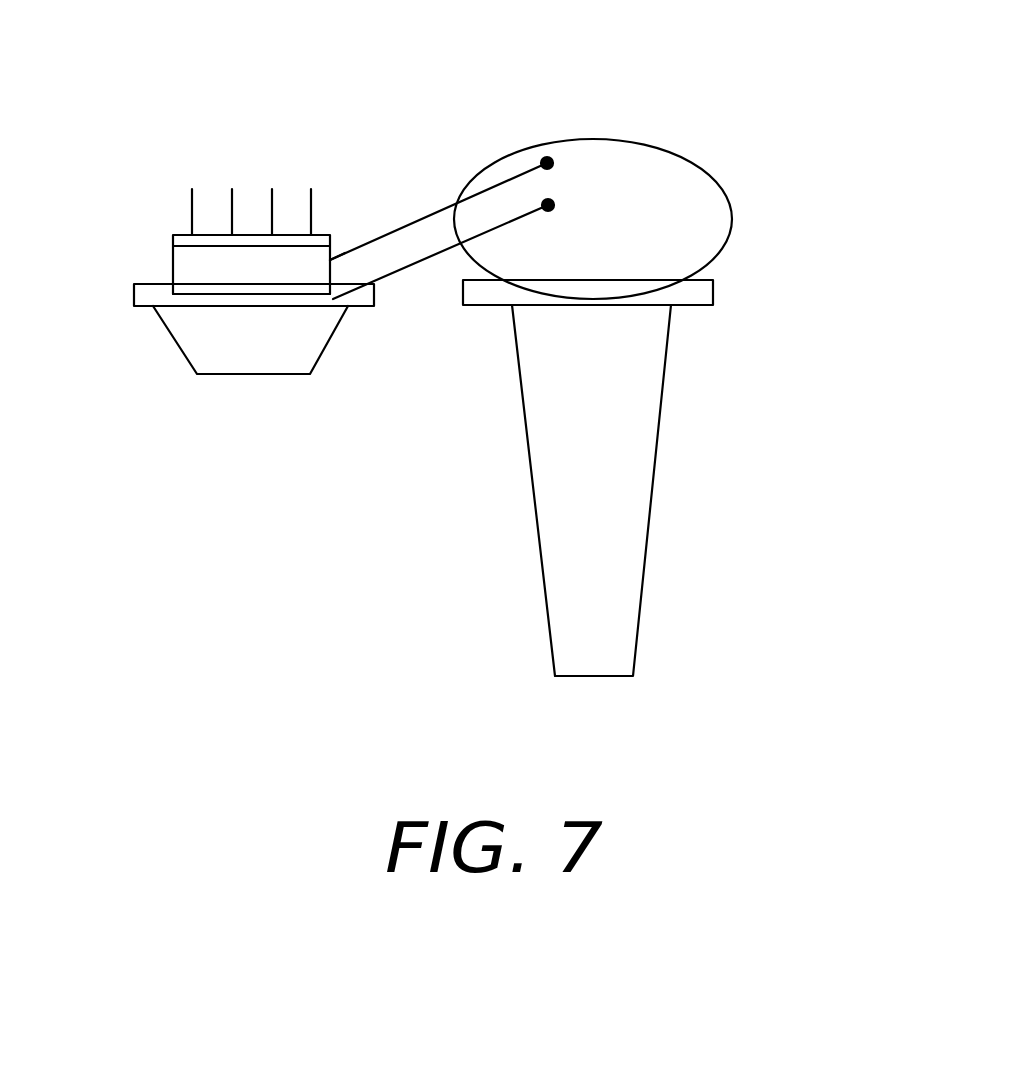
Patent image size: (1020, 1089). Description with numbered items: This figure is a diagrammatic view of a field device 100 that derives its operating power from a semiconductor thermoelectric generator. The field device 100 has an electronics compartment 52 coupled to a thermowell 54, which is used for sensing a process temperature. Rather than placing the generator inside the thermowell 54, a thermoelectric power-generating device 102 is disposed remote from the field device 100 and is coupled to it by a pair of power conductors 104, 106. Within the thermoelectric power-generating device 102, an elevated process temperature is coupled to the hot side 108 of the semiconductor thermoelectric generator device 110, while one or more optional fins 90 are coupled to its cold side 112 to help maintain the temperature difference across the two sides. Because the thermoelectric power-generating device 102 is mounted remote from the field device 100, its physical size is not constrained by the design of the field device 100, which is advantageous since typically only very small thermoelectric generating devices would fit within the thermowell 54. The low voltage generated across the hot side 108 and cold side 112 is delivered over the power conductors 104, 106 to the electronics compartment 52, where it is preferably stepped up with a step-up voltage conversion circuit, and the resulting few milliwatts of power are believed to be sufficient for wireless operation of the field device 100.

The electronics compartment 52 is at (648, 143).
The thermowell 54 is at (660, 422).
The fins 90 is at (311, 202).
The field device 100 is at (679, 361).
The thermoelectric power-generating device 102 is at (143, 307).
The power conductor 104 is at (403, 225).
The power conductor 106 is at (413, 265).
The hot side 108 is at (187, 294).
The semiconductor thermoelectric generator device 110 is at (251, 264).
The cold side 112 is at (330, 237).